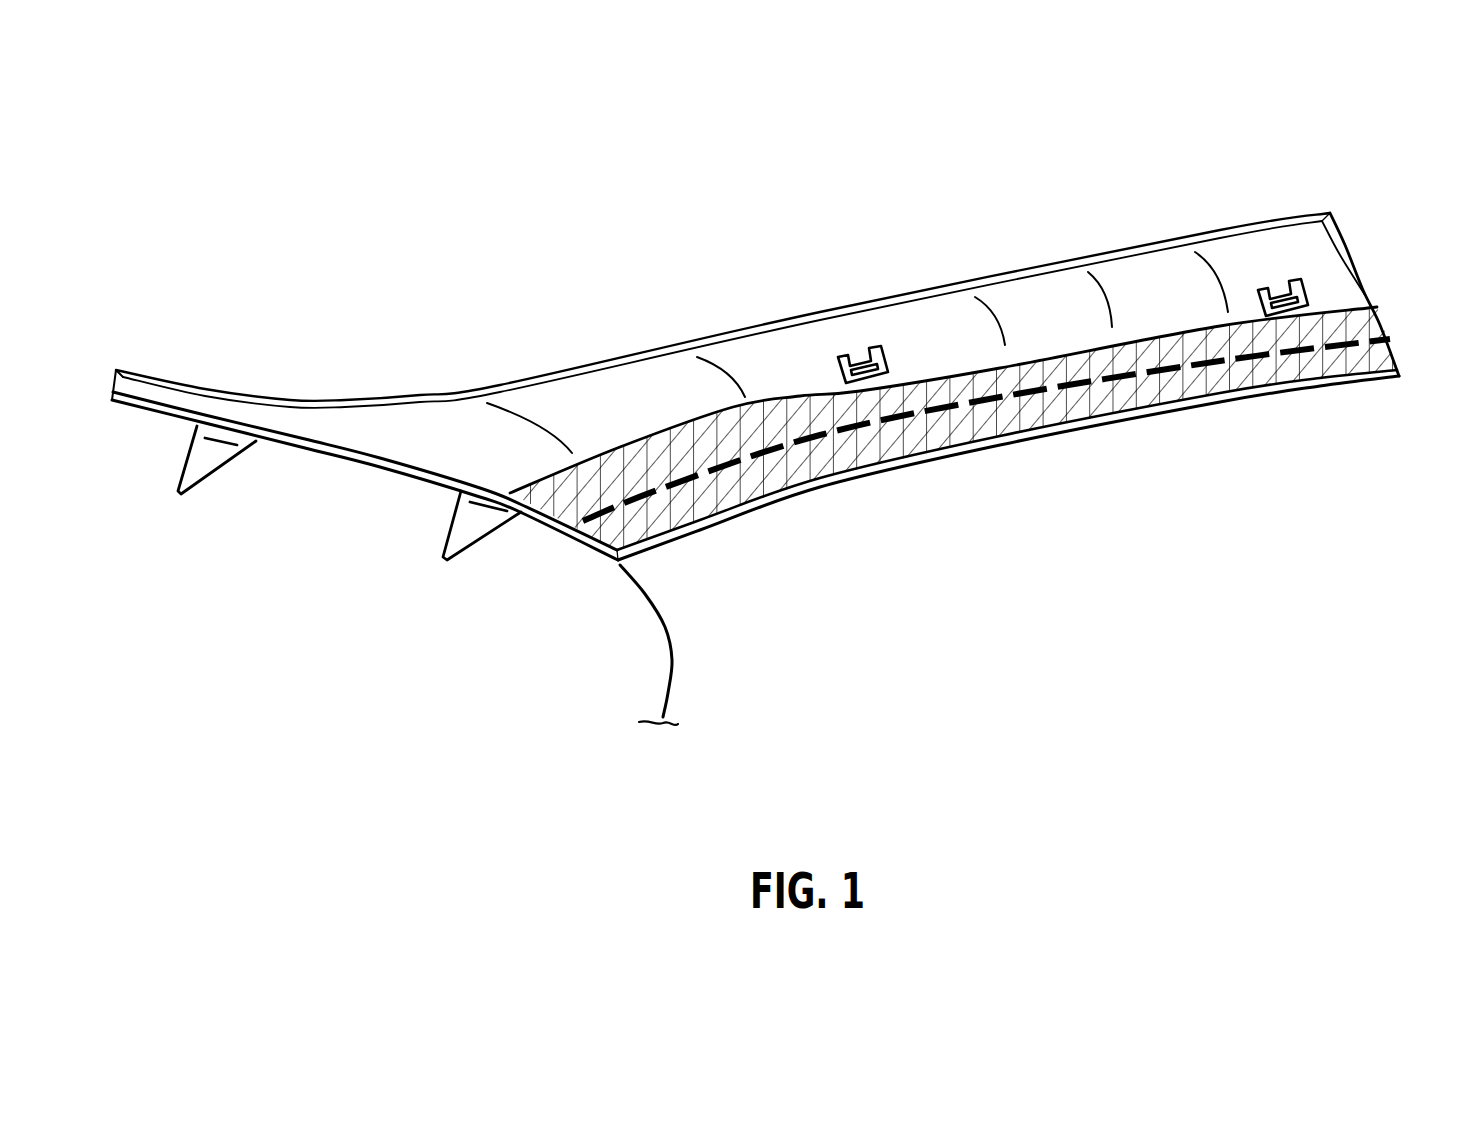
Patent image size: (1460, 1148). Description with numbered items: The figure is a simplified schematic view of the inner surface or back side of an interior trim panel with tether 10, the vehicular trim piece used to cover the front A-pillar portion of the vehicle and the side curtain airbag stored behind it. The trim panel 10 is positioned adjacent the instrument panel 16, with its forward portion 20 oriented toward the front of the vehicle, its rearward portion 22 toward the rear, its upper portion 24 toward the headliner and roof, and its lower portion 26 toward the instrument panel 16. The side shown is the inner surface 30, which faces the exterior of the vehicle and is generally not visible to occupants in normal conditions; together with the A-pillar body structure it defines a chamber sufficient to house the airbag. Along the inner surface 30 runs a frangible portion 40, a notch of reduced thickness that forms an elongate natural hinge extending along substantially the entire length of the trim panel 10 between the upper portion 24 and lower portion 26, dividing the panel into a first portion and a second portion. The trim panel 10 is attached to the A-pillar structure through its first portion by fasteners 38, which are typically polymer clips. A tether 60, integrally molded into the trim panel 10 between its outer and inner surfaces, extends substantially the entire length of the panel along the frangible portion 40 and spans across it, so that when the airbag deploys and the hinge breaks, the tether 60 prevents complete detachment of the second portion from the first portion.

The interior trim panel with tether 10 is at (778, 335).
The instrument panel 16 is at (678, 687).
The forward portion 20 is at (288, 400).
The rearward portion 22 is at (878, 477).
The upper portion 24 is at (1347, 243).
The lower portion 26 is at (313, 458).
The inner surface 30 is at (933, 320).
The fasteners 38 is at (860, 358).
The frangible portion 40 is at (1383, 313).
The tether 60 is at (1000, 410).